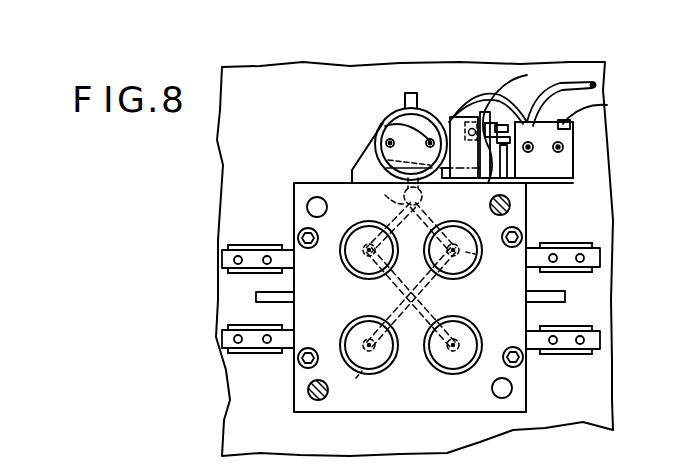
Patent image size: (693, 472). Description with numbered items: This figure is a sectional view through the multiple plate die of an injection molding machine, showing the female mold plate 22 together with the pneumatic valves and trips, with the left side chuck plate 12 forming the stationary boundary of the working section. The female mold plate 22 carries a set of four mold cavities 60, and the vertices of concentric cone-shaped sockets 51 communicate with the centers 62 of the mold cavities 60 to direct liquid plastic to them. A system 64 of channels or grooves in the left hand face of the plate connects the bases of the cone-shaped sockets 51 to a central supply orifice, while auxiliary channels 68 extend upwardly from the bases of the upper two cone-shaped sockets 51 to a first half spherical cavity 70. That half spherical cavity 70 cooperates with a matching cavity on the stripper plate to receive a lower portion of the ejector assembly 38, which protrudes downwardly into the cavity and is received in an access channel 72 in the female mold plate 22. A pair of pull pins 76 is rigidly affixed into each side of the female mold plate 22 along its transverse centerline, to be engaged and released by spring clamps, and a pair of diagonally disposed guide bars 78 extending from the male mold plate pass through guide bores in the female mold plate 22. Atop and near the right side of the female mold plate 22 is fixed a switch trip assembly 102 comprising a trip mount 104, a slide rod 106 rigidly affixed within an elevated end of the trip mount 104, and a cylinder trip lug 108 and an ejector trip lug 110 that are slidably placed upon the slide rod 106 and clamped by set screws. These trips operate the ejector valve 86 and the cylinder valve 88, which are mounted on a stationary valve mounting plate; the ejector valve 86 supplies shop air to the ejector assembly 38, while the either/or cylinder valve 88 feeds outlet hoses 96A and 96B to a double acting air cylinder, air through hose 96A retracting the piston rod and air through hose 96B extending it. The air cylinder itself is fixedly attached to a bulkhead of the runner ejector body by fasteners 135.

The left side chuck plate 12 is at (283, 150).
The female mold plate 22 is at (425, 403).
The ejector assembly 38 is at (378, 153).
The cone-shaped sockets 51 is at (475, 254).
The mold cavities 60 is at (367, 318).
The inner bore openings 62 is at (458, 258).
The system of channels 64 is at (420, 296).
The auxiliary channels 68 is at (396, 224).
The first half spherical cavity 70 is at (385, 195).
The access channel 72 is at (402, 184).
The pull pins 76 is at (262, 292).
The guide bars 78 is at (510, 213).
The ejector valve 86 is at (607, 105).
The cylinder valve 88 is at (575, 135).
The outlet hose 96A is at (529, 153).
The outlet hose 96B is at (562, 151).
The switch trip assembly 102 is at (473, 72).
The trip mount 104 is at (481, 112).
The slide rod 106 is at (469, 129).
The cylinder trip lug 108 is at (506, 123).
The ejector trip lug 110 is at (490, 183).
The fasteners 135 is at (385, 126).